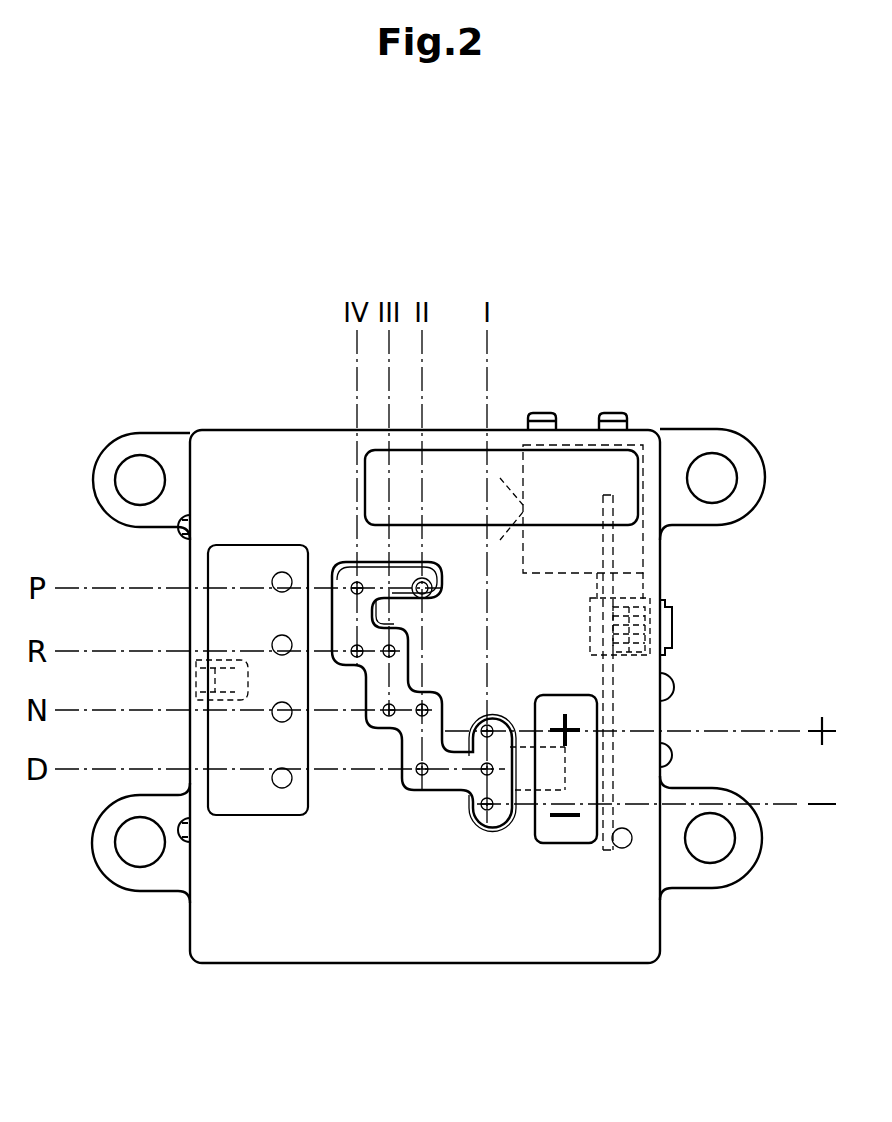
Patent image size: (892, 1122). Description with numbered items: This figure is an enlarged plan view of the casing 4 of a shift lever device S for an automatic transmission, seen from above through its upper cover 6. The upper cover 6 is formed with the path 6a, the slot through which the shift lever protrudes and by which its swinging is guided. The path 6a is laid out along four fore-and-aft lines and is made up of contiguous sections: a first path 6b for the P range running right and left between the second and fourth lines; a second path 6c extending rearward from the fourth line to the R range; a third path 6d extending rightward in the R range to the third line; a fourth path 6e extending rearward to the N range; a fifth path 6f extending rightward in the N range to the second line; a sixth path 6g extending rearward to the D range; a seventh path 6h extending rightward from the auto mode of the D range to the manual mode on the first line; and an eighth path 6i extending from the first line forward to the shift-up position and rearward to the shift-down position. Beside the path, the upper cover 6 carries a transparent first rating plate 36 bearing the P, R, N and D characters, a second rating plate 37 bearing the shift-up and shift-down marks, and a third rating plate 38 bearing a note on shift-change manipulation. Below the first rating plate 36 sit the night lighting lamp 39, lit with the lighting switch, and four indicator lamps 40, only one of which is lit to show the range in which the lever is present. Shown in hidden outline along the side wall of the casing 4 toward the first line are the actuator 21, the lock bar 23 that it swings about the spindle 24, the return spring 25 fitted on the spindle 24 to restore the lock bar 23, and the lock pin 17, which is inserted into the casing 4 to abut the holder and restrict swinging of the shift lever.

The casing 4 is at (666, 926).
The shift position sensor S is at (172, 921).
The upper cover 6 is at (272, 452).
The path 6a is at (405, 760).
The first path 6b is at (402, 577).
The second path 6c is at (348, 612).
The third path 6d is at (377, 640).
The fourth path 6e is at (398, 682).
The fifth path 6f is at (402, 717).
The sixth path 6g is at (432, 738).
The seventh path 6h is at (448, 775).
The eighth path 6i is at (513, 808).
The lock pin 17 is at (550, 758).
The actuator 21 is at (632, 455).
The lock bar 23 is at (665, 672).
The spindle 24 is at (672, 626).
The return spring 25 is at (648, 592).
The first rating plate 36 is at (139, 678).
The second rating plate 37 is at (570, 835).
The third rating plate 38 is at (502, 462).
The night lighting lamp 39 is at (192, 678).
The indicator lamps 40 is at (272, 640).